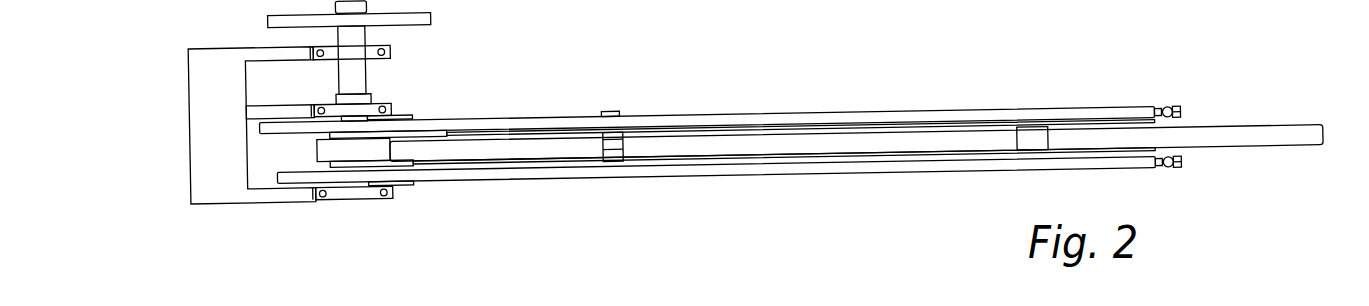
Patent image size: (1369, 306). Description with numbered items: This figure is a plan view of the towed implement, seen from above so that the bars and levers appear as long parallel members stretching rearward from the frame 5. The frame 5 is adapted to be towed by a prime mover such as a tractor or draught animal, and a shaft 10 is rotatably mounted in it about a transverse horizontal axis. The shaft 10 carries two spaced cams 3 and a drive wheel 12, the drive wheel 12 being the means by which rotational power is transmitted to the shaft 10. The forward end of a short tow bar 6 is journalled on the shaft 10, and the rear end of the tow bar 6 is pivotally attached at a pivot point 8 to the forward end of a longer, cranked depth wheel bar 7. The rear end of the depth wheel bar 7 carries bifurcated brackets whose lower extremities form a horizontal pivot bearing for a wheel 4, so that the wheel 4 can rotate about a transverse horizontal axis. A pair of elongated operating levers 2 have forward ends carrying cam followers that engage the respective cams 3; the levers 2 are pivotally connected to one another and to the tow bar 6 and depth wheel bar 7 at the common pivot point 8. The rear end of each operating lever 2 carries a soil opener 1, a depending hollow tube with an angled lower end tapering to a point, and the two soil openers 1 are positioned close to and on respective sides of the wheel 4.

The soil opener 1 is at (1170, 108).
The operating lever 2 is at (835, 118).
The cam 3 is at (413, 122).
The wheel 4 is at (1252, 135).
The frame 5 is at (208, 117).
The tow bar 6 is at (518, 152).
The depth wheel bar 7 is at (995, 138).
The pivot point 8 is at (612, 112).
The shaft 10 is at (352, 73).
The drive wheel 12 is at (413, 22).